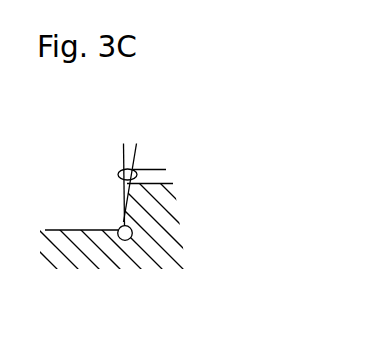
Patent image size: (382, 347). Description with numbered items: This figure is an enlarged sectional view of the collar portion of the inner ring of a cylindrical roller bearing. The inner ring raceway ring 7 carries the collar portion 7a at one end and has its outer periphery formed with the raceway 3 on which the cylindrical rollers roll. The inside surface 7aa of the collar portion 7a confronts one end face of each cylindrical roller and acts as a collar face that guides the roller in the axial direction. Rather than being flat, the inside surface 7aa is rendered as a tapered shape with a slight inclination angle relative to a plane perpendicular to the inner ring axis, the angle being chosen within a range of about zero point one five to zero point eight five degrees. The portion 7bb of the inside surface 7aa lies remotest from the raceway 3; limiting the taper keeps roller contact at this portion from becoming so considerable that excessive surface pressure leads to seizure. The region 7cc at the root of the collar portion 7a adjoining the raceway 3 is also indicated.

The raceway 3 is at (67, 230).
The inner ring raceway ring 7 is at (145, 275).
The collar portion 7a is at (172, 208).
The inside surface 7aa is at (123, 203).
The portion remotest from the raceway 7bb is at (166, 170).
The curled end 7cc is at (127, 225).